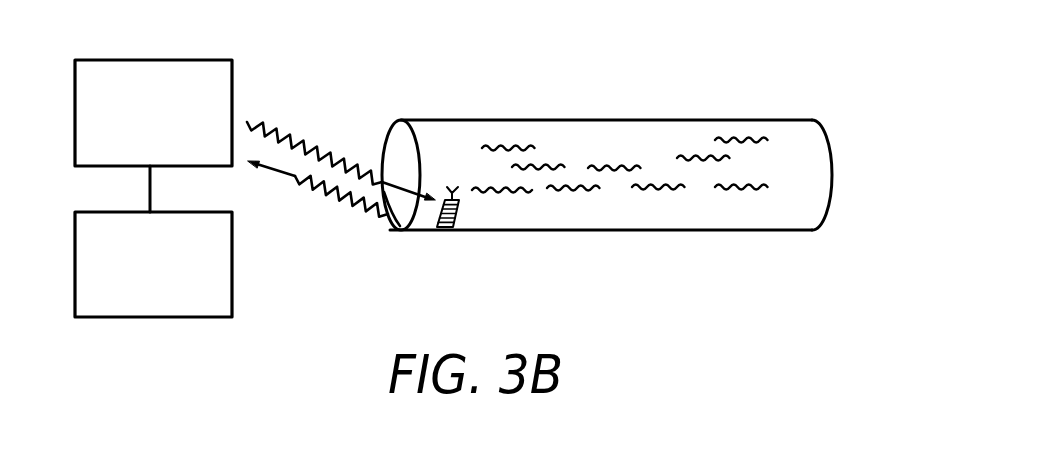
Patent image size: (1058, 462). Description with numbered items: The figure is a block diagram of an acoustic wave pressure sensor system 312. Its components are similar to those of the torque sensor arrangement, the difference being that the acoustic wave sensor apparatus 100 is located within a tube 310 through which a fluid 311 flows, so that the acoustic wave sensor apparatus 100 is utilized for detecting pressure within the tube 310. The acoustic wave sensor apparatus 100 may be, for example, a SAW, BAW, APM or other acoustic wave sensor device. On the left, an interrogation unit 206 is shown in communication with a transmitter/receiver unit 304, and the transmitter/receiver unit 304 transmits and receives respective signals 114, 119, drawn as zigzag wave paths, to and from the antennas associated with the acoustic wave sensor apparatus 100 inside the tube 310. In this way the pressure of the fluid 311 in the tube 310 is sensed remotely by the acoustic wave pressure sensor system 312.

The transmitter/receiver unit 304 is at (175, 128).
The interrogation unit 206 is at (175, 278).
The tube 310 is at (810, 177).
The fluid 311 is at (689, 140).
The signal 114 is at (302, 143).
The signal 119 is at (313, 196).
The acoustic wave sensor apparatus 100 is at (459, 217).
The acoustic wave pressure sensor system 312 is at (838, 268).